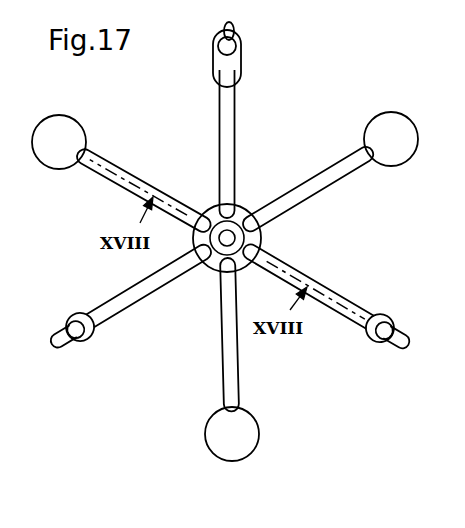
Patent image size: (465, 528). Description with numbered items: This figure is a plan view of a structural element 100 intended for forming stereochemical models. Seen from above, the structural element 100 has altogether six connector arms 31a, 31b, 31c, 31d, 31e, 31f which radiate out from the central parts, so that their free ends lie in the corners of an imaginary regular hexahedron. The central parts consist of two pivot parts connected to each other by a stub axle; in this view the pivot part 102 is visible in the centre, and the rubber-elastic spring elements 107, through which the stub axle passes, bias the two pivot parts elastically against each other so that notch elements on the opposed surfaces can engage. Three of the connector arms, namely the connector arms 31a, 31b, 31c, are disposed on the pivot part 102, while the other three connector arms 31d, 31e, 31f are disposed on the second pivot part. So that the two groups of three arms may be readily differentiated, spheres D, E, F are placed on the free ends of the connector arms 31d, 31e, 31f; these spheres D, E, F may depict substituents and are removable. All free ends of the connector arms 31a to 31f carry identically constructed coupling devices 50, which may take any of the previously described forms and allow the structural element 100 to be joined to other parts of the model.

The structural element 100 is at (145, 374).
The pivot part 102 is at (253, 237).
The rubber-elastic spring element 107 is at (240, 225).
The connector arm 31a is at (333, 297).
The connector arm 31b is at (137, 302).
The connector arm 31c is at (222, 131).
The connector arm 31d is at (325, 177).
The connector arm 31e is at (224, 350).
The connector arm 31f is at (125, 177).
The coupling device 50 is at (218, 62).
The sphere D is at (382, 128).
The sphere E is at (227, 435).
The sphere F is at (70, 137).